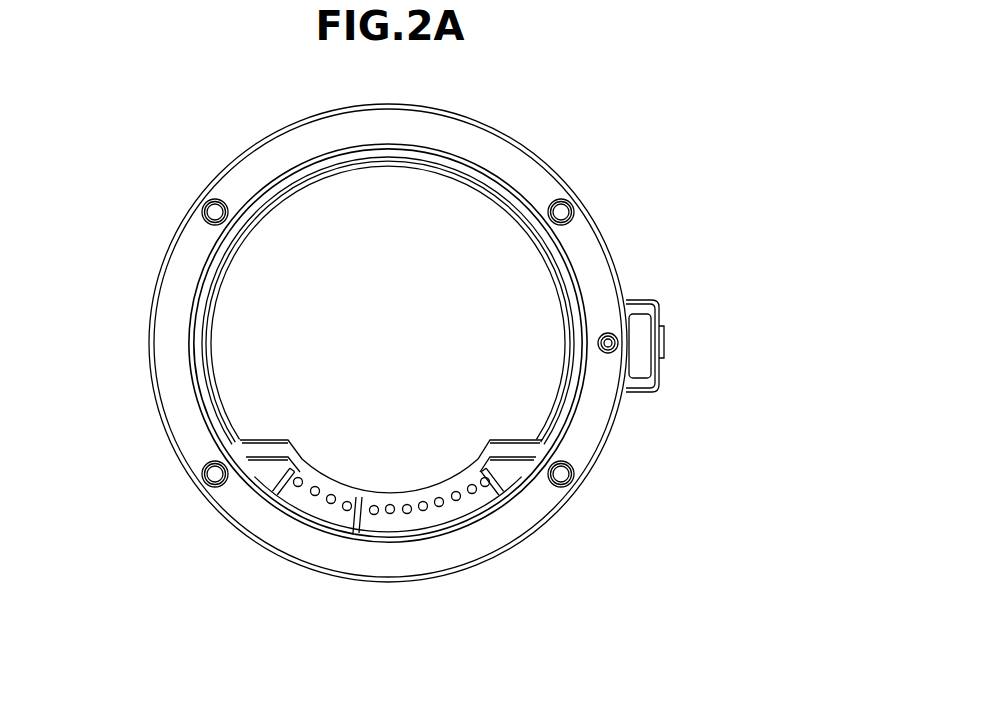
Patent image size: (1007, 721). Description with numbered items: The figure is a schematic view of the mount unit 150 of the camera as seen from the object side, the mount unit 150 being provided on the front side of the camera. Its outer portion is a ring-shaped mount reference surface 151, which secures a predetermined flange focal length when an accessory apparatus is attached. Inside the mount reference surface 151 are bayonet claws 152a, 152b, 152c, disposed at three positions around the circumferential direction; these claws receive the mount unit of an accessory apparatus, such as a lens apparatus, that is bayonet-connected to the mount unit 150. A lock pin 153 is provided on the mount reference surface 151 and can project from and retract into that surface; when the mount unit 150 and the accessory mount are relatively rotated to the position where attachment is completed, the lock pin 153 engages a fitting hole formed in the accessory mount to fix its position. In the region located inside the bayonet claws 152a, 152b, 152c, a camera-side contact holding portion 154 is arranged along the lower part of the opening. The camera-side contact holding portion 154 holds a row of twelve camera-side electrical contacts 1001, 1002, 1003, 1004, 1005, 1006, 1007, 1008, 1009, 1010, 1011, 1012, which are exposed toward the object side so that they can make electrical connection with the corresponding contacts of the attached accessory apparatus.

The mount unit 150 is at (143, 130).
The mount reference surface 151 is at (528, 175).
The bayonet claw 152a is at (408, 152).
The bayonet claw 152b is at (192, 357).
The bayonet claw 152c is at (546, 490).
The lock pin 153 is at (619, 343).
The camera-side contact holding portion 154 is at (512, 462).
The electrical contact 1001 is at (295, 487).
The electrical contact 1002 is at (313, 496).
The electrical contact 1003 is at (329, 504).
The electrical contact 1004 is at (345, 511).
The electrical contact 1005 is at (372, 515).
The electrical contact 1006 is at (390, 514).
The electrical contact 1007 is at (408, 514).
The electrical contact 1008 is at (425, 511).
The electrical contact 1009 is at (441, 507).
The electrical contact 1010 is at (458, 501).
The electrical contact 1011 is at (474, 494).
The electrical contact 1012 is at (487, 487).